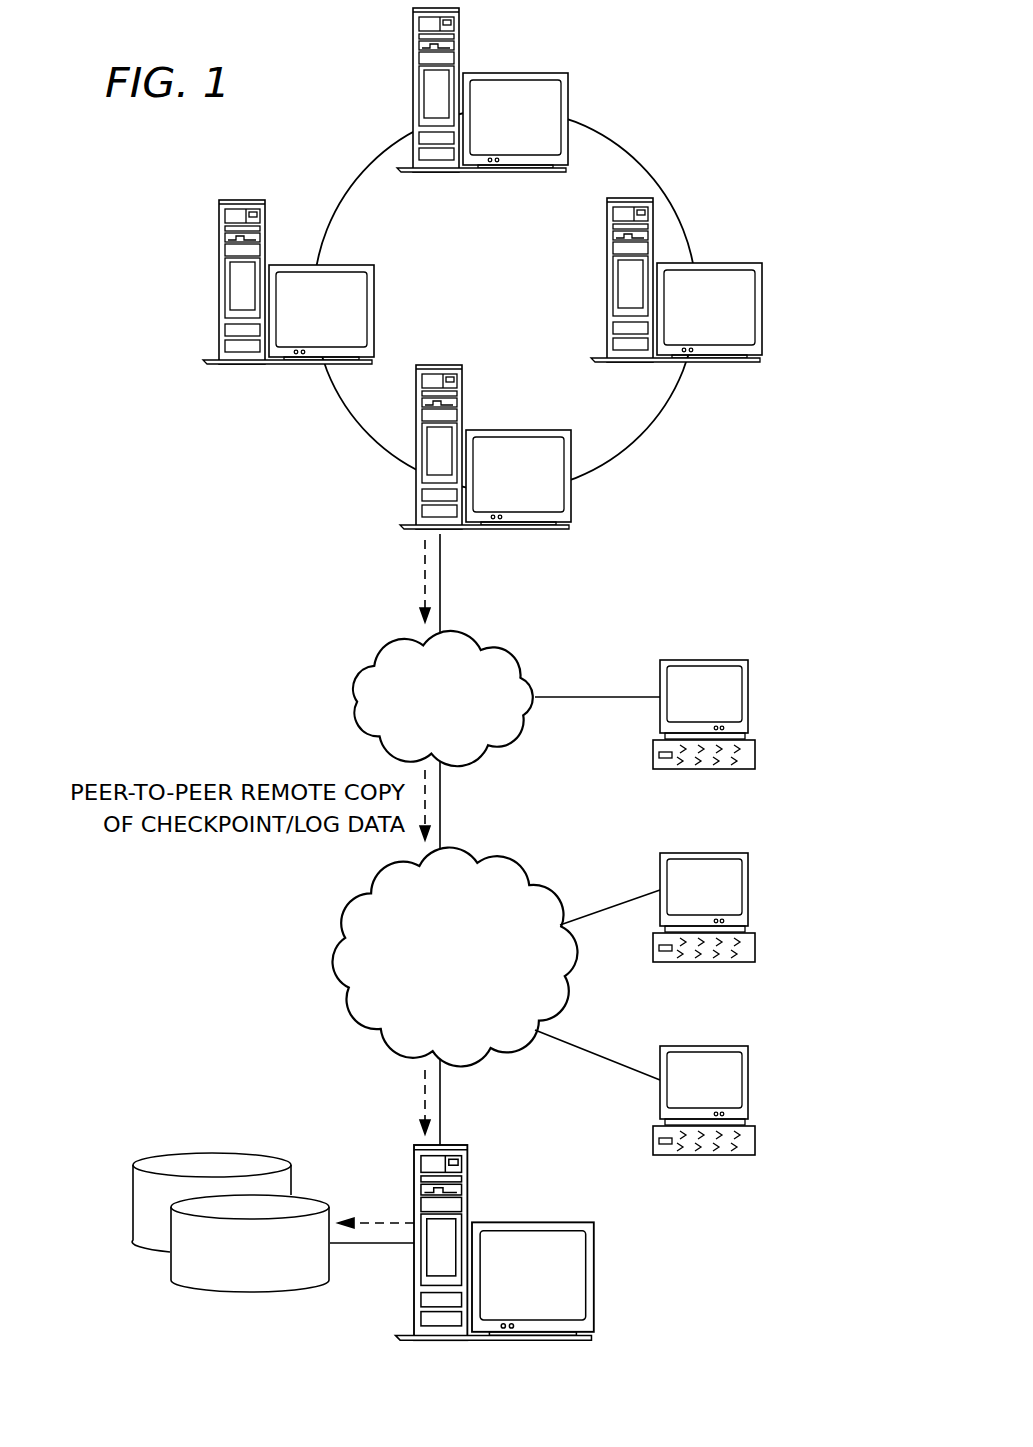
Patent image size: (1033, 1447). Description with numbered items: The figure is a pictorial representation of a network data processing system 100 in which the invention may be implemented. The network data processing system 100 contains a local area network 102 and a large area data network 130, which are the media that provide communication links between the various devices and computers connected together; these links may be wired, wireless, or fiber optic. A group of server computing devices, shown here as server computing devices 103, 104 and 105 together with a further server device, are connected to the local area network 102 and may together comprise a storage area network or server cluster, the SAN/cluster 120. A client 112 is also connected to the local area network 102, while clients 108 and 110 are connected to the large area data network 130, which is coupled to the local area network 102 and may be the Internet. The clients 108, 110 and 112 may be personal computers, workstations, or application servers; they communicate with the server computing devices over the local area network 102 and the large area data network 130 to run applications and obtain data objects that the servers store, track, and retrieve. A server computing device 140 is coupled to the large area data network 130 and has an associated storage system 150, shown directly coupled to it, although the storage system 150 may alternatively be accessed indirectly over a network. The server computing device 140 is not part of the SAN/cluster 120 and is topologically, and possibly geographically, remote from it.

The network data processing system 100 is at (752, 110).
The local area network 102 is at (735, 265).
The server computing device 103 is at (413, 90).
The server computing device 104 is at (242, 199).
The server computing device 105 is at (413, 492).
The SAN/cluster 120 is at (530, 318).
The client 108 is at (748, 888).
The client 110 is at (748, 1083).
The client 112 is at (748, 697).
The large area data network 130 is at (380, 1037).
The server computing device 140 is at (597, 1278).
The storage system 150 is at (253, 1295).